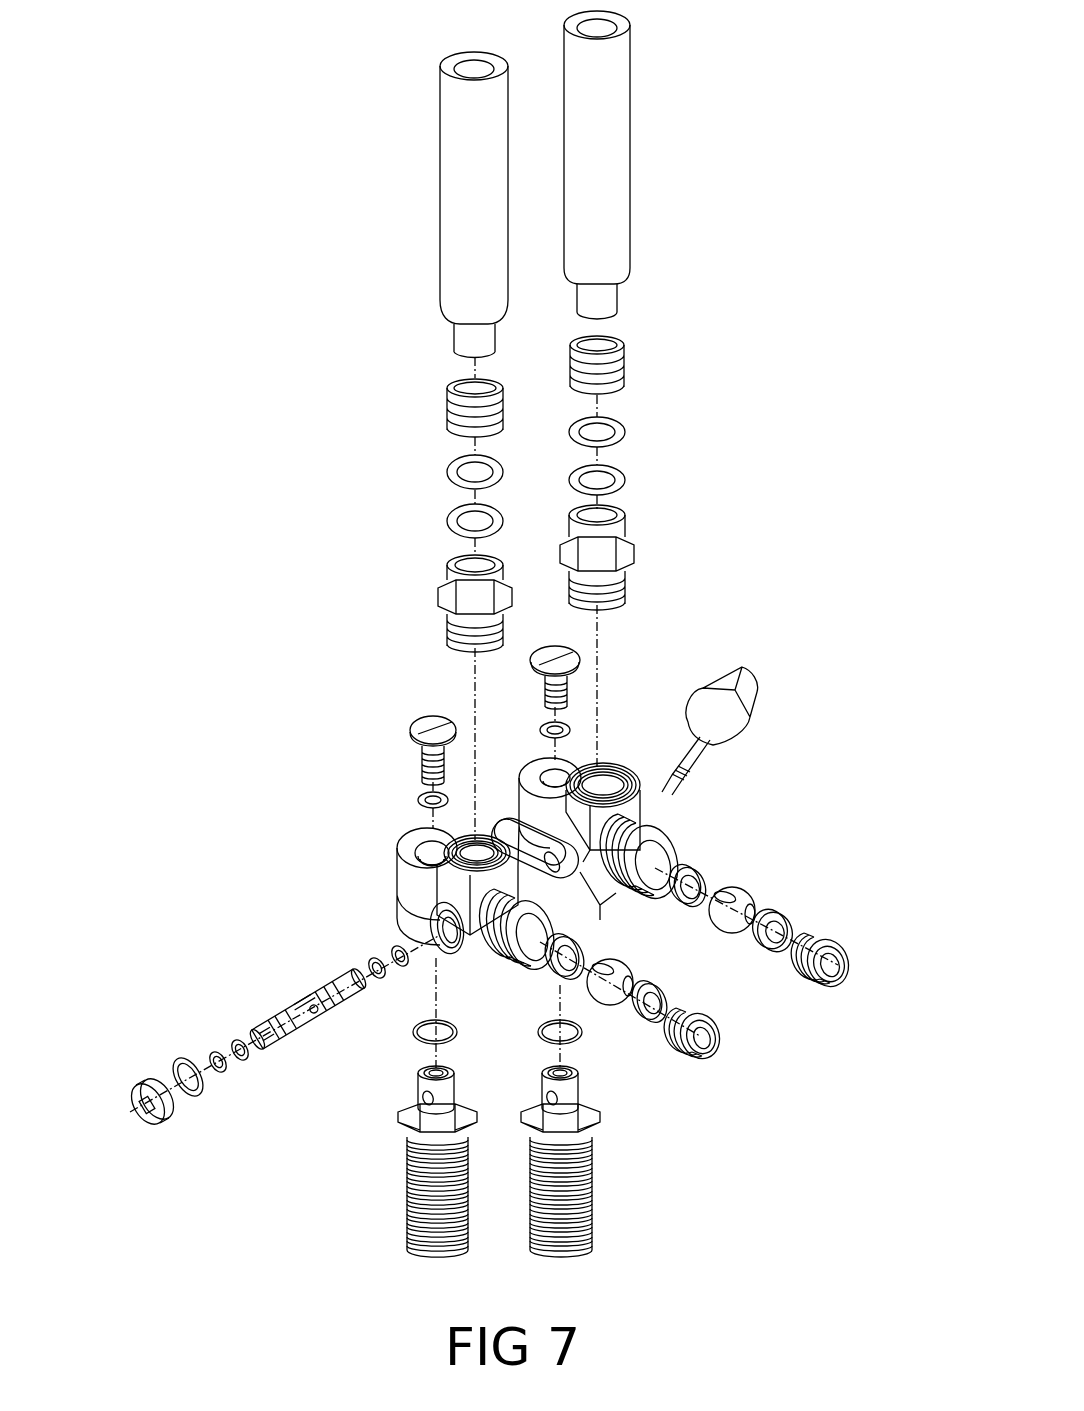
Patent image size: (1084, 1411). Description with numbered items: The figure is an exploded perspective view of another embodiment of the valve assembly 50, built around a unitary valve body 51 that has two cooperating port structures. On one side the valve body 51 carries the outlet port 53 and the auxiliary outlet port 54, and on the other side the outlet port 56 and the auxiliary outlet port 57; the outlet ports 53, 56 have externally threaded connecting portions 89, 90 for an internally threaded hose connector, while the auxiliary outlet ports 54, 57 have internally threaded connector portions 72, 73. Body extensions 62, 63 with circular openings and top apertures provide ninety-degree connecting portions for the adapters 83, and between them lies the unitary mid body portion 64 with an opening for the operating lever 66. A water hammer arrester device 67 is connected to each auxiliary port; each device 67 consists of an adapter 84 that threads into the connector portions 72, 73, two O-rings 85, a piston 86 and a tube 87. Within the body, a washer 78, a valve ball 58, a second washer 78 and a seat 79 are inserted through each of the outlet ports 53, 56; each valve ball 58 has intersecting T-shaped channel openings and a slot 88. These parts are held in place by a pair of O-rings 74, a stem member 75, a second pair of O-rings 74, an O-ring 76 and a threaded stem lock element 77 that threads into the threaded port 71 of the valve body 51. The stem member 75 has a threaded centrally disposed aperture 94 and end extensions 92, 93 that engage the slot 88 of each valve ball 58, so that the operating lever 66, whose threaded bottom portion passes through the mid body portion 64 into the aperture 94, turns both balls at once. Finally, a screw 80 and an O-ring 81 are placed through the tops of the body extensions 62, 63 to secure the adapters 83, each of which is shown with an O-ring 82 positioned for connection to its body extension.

The valve assembly 50 is at (405, 605).
The valve body 51 is at (497, 882).
The outlet port 53 is at (519, 964).
The auxiliary outlet port 54 is at (472, 840).
The outlet port 56 is at (642, 884).
The auxiliary outlet port 57 is at (607, 773).
The valve ball 58 is at (746, 884).
The body extension 62 is at (398, 853).
The body extension 63 is at (568, 764).
The unitary mid body portion 64 is at (583, 863).
The operating lever 66 is at (760, 704).
The water hammer arrester device 67 is at (548, 184).
The threaded port 71 is at (441, 934).
The internally threaded connector portion 72 is at (437, 864).
The internally threaded connector portion 73 is at (629, 781).
The O-ring 74 is at (394, 950).
The stem member 75 is at (300, 1000).
The O-ring 76 is at (199, 1096).
The threaded stem lock element 77 is at (147, 1122).
The washer 78 is at (701, 866).
The seat 79 is at (838, 946).
The screw 80 is at (408, 735).
The O-ring 81 is at (416, 800).
The O-ring 82 is at (413, 1043).
The adapter 83 is at (399, 1182).
The adapter 84 is at (444, 588).
The O-ring 85 is at (452, 462).
The piston 86 is at (450, 404).
The tube 87 is at (450, 218).
The slot 88 is at (722, 928).
The externally threaded connecting portion 89 is at (486, 962).
The externally threaded connecting portion 90 is at (653, 820).
The end extension 92 is at (257, 1022).
The end extension 93 is at (346, 972).
The threaded aperture 94 is at (316, 1012).